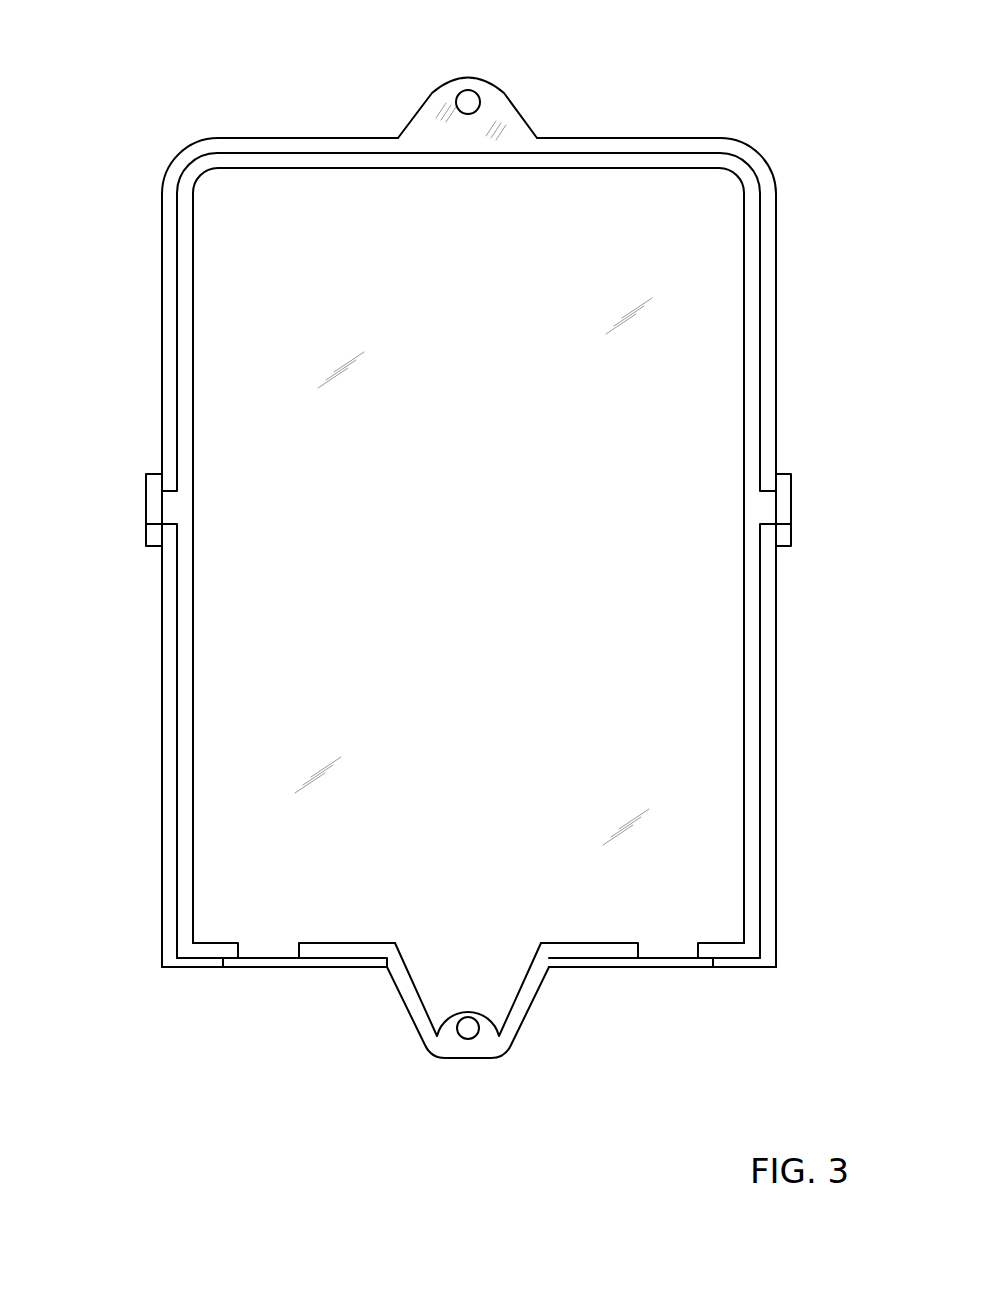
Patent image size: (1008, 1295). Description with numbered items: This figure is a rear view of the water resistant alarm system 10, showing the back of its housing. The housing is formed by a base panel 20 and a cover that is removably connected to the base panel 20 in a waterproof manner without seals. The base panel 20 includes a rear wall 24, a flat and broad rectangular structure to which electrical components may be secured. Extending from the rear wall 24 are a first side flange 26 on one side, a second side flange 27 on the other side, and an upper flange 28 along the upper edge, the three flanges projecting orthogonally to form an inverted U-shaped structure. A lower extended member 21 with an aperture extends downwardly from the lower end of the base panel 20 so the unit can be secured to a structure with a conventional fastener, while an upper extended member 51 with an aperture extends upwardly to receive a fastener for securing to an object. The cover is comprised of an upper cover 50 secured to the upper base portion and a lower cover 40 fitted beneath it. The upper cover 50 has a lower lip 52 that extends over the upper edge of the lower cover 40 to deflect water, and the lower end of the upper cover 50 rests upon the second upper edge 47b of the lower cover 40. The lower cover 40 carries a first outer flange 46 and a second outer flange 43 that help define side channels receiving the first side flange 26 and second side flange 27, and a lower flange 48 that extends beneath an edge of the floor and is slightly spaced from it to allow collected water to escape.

The water resistant alarm system 10 is at (177, 93).
The base panel 20 is at (328, 962).
The lower extended member 21 is at (420, 1043).
The rear wall 24 is at (550, 621).
The first side flange 26 is at (758, 322).
The second side flange 27 is at (177, 323).
The upper flange 28 is at (333, 152).
The lower cover 40 is at (160, 688).
The second outer flange 43 is at (163, 508).
The first outer flange 46 is at (782, 508).
The second upper edge 47b is at (150, 541).
The lower flange 48 is at (726, 967).
The upper cover 50 is at (615, 130).
The upper extended member 51 is at (490, 80).
The lower lip 52 is at (150, 500).